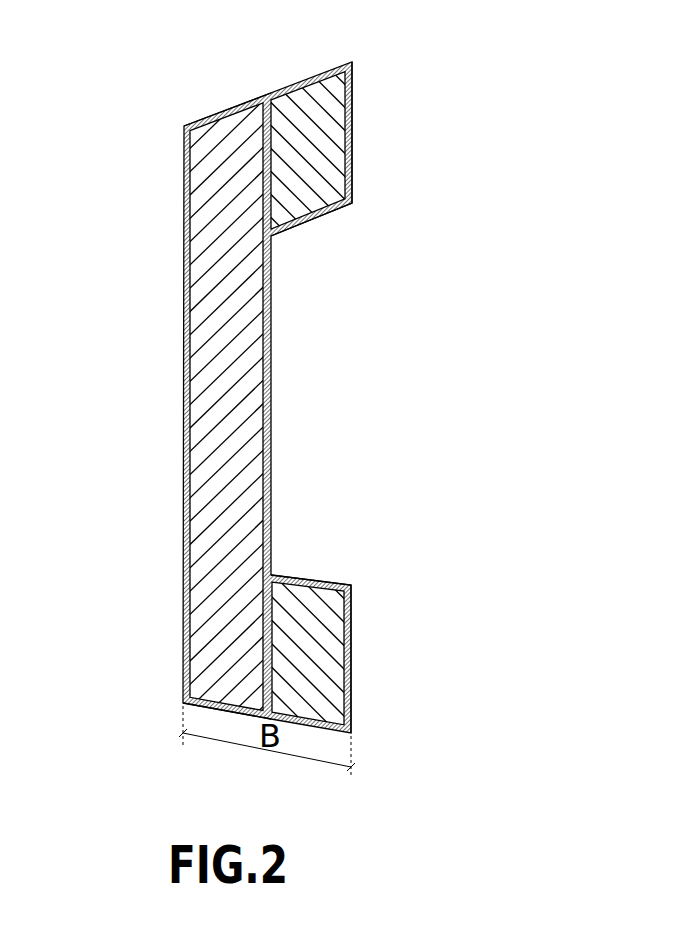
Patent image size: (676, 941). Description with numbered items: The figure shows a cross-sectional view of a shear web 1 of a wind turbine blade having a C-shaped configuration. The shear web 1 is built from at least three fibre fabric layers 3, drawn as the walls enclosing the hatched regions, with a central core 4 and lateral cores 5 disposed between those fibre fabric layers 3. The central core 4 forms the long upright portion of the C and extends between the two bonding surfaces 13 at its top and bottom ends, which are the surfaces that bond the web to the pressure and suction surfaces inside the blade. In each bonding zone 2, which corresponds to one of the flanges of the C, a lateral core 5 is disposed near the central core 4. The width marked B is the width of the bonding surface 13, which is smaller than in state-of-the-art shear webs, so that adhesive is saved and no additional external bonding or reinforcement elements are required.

The shear web 1 is at (286, 400).
The bonding zone 2 is at (362, 399).
The fibre fabric layer 3 is at (185, 243).
The central core 4 is at (205, 366).
The lateral core 5 is at (305, 117).
The bonding surface 13 is at (215, 97).